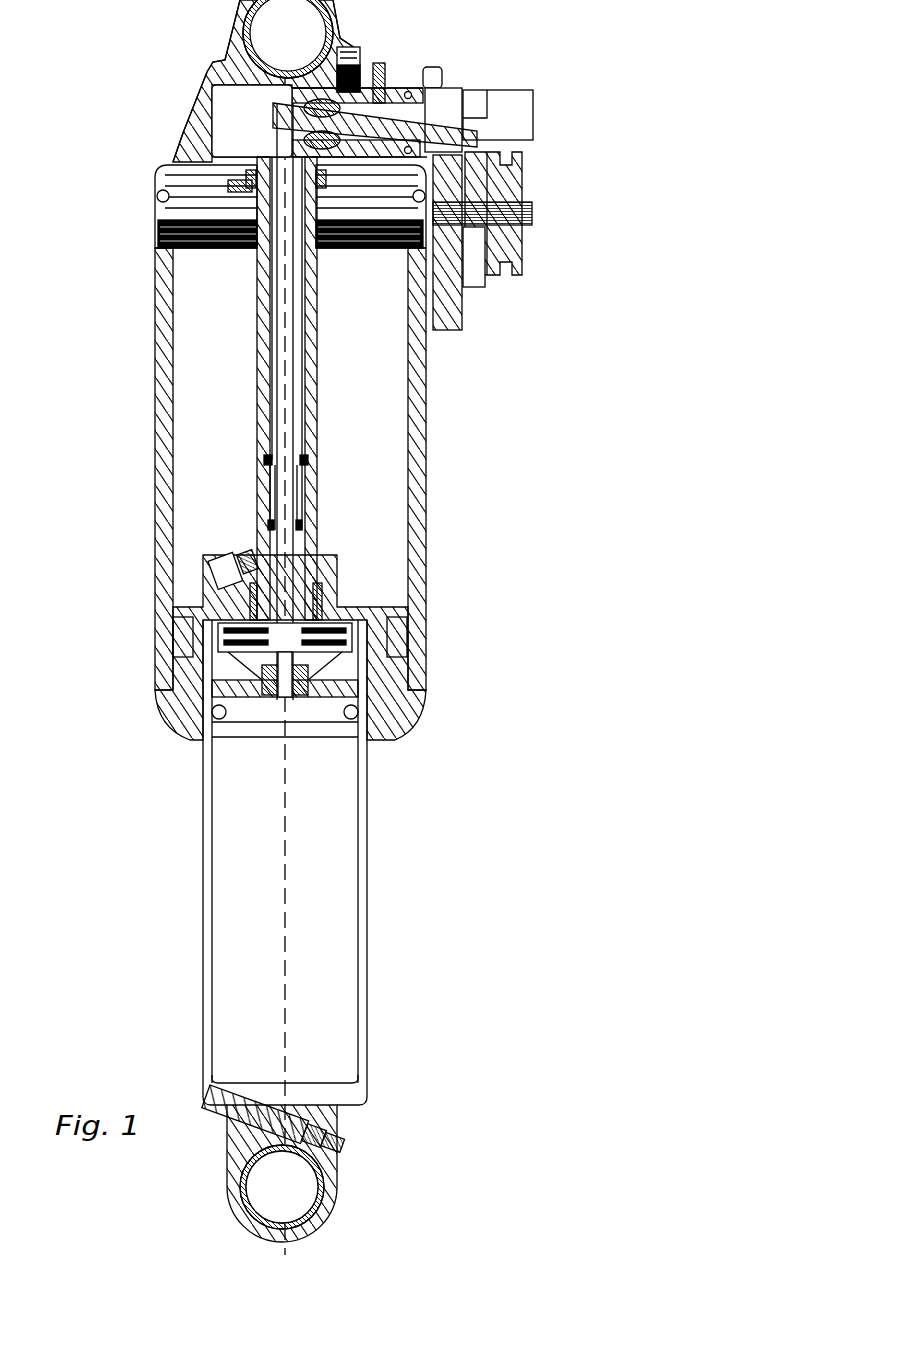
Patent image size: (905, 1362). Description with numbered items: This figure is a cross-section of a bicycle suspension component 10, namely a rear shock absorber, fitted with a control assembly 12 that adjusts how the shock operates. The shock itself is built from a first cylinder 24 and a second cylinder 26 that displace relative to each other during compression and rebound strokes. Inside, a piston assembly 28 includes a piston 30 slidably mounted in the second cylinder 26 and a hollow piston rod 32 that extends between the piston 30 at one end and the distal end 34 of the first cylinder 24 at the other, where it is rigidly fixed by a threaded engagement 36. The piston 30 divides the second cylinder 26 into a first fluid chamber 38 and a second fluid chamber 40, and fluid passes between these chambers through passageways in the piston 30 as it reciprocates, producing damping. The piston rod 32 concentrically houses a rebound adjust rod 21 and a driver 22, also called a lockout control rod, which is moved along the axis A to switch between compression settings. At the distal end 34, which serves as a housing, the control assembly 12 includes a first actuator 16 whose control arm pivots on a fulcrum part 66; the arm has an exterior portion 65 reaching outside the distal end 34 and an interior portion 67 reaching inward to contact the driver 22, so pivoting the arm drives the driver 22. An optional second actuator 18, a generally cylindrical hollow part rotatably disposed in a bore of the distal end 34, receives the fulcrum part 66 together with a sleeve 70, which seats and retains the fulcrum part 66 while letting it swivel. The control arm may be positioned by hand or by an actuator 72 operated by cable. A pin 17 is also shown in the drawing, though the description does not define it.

The suspension component 10 is at (106, 132).
The control assembly 12 is at (518, 69).
The first actuator 16 is at (548, 152).
The pin 17 is at (430, 70).
The second actuator 18 is at (455, 59).
The rebound adjust rod 21 is at (303, 413).
The driver 22 is at (292, 375).
The first cylinder 24 is at (425, 440).
The second cylinder 26 is at (367, 883).
The piston assembly 28 is at (396, 748).
The piston 30 is at (348, 625).
The piston rod 32 is at (310, 440).
The distal end 34 is at (160, 160).
The threaded engagement 36 is at (326, 185).
The first fluid chamber 38 is at (215, 580).
The second fluid chamber 40 is at (232, 921).
The exterior portion 65 is at (447, 137).
The fulcrum part 66 is at (317, 100).
The interior portion 67 is at (268, 122).
The sleeve 70 is at (365, 52).
The actuator 72 is at (517, 195).
The axis A is at (283, 852).